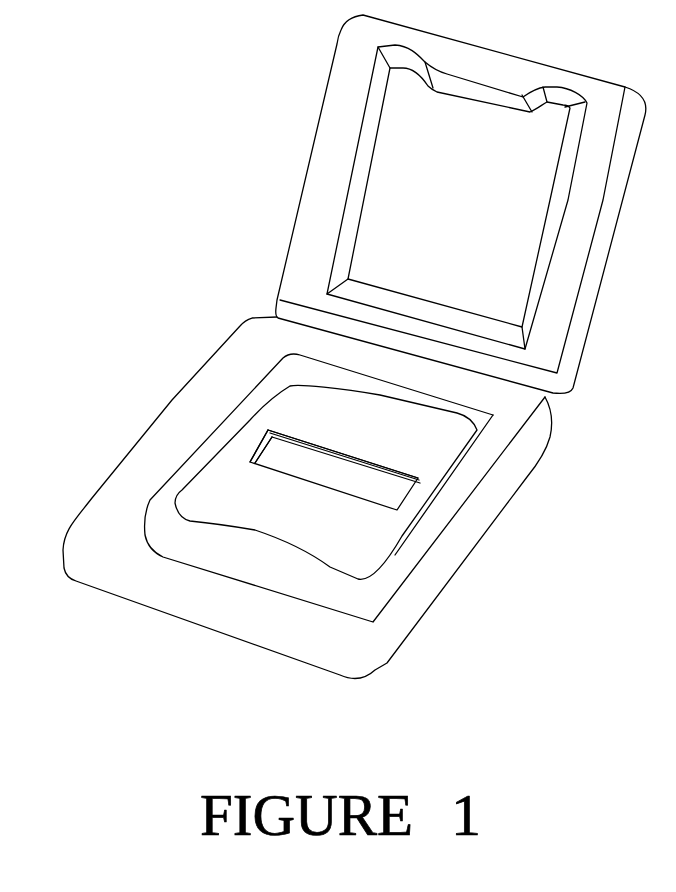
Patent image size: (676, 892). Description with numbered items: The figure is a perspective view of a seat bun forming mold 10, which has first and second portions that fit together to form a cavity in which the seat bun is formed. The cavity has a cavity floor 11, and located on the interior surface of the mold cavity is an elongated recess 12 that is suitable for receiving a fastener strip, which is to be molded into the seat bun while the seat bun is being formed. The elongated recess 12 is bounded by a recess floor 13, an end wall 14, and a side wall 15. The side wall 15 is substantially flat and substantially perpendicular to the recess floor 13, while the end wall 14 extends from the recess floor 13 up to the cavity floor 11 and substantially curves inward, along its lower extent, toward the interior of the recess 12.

The seat bun forming mold 10 is at (207, 282).
The cavity floor 11 is at (228, 493).
The elongated recess 12 is at (413, 497).
The recess floor 13 is at (357, 483).
The end wall 14 is at (252, 443).
The side wall 15 is at (380, 468).